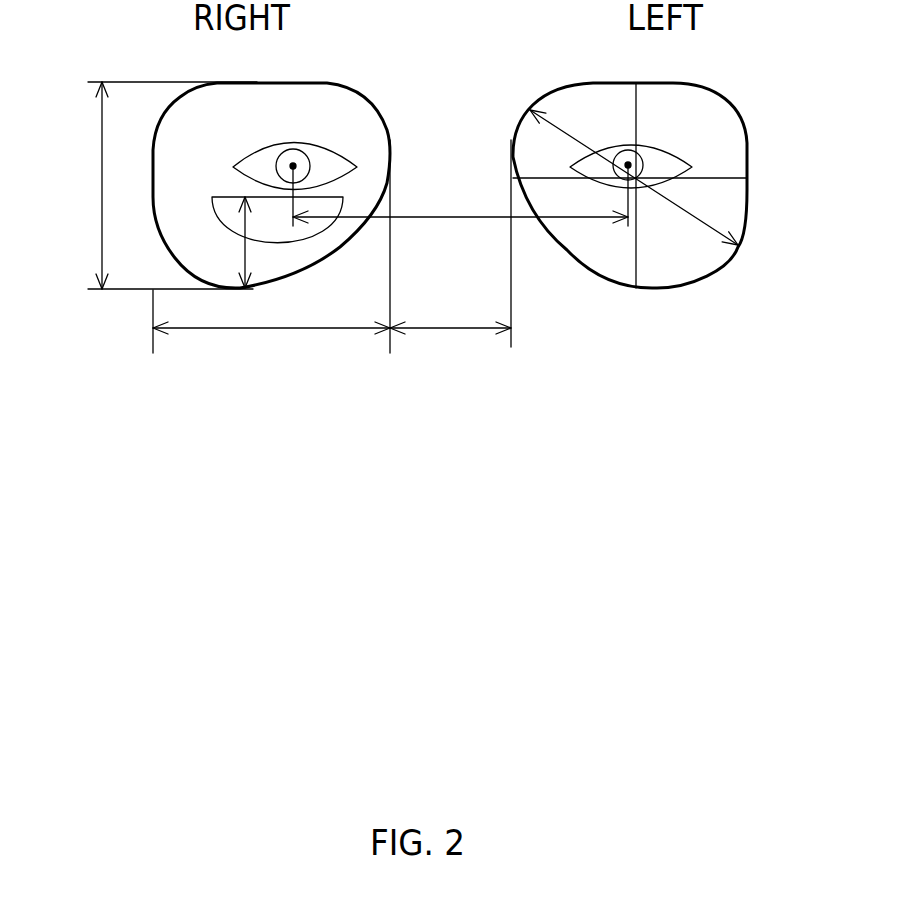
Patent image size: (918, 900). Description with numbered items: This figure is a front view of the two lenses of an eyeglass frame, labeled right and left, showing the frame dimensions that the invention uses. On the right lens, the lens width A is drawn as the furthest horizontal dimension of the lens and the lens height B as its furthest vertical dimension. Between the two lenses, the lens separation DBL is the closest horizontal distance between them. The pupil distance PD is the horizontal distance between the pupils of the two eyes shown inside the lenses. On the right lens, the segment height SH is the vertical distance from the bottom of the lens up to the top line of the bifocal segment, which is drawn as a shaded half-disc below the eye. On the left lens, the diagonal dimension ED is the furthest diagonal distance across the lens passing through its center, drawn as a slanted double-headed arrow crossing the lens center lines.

The lens width A is at (271, 248).
The lens height B is at (168, 185).
The lens separation DBL is at (450, 249).
The pupil distance PD is at (460, 204).
The segment height SH is at (276, 242).
The diagonal dimension ED is at (634, 177).